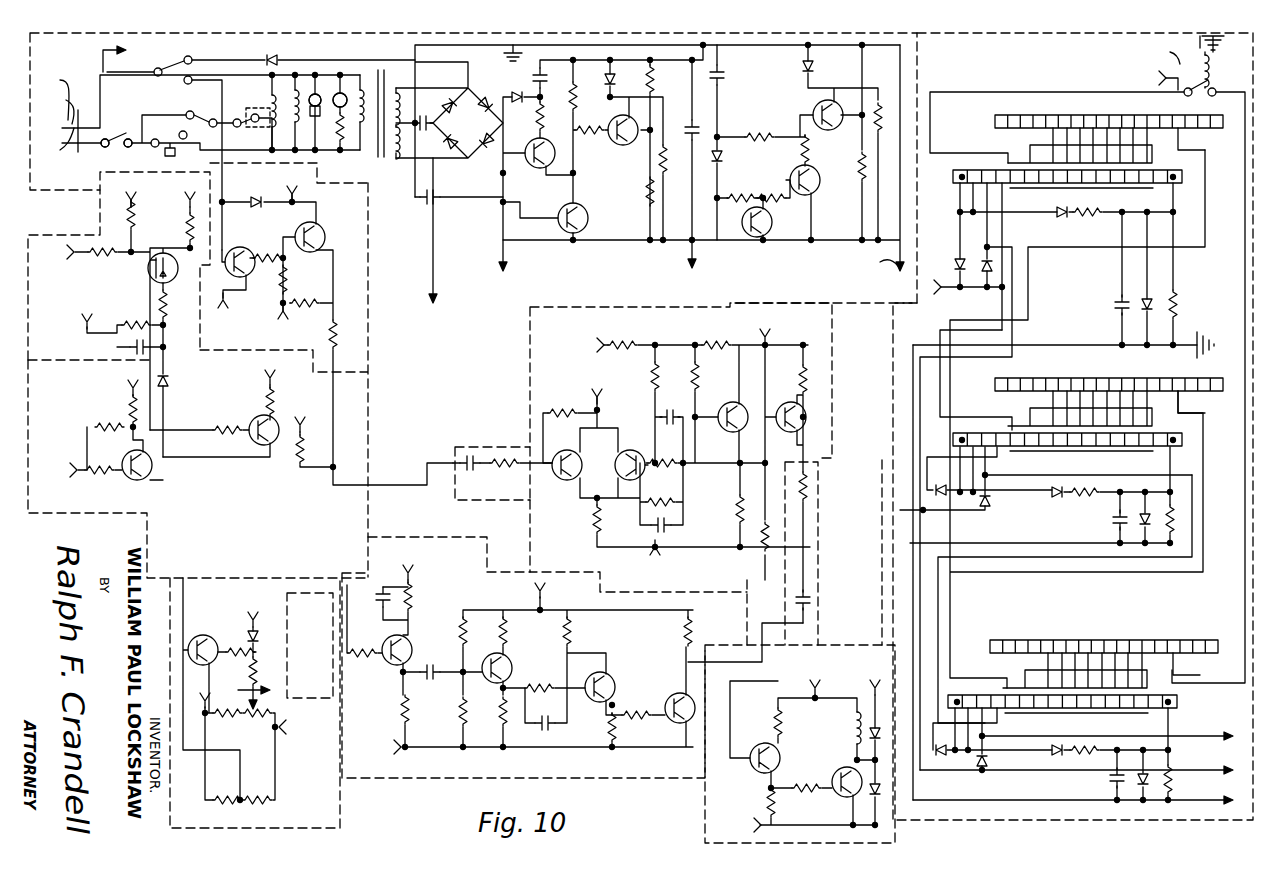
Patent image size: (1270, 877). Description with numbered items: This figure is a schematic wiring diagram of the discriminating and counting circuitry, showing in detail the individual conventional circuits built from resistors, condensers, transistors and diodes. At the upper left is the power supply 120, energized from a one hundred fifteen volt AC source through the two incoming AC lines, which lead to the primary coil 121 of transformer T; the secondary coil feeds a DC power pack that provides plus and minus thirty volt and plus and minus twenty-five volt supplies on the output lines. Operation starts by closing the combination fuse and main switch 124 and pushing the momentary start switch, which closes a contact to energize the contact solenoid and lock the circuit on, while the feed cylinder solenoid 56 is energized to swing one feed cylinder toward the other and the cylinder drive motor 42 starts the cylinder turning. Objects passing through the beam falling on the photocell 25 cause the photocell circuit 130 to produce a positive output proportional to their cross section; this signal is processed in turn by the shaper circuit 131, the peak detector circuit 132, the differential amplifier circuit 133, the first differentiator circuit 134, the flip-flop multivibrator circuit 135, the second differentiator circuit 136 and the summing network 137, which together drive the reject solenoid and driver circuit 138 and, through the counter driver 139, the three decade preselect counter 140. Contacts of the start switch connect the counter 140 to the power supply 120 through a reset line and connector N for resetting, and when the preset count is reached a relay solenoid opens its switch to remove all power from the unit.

The electrical power supply 120 is at (912, 33).
The primary coil 121 is at (364, 152).
The combination fuse and main switch 124 is at (114, 132).
The feed cylinder solenoid 56 is at (297, 94).
The cylinder drive motor 42 is at (342, 93).
The photocell 25 is at (224, 621).
The photocell circuit 130 is at (272, 660).
The shaper circuit 131 is at (434, 538).
The peak detector circuit 132 is at (102, 210).
The differential amplifier circuit 133 is at (77, 511).
The first differentiator circuit 134 is at (505, 453).
The flip-flop multivibrator circuit 135 is at (835, 422).
The second differentiator circuit 136 is at (814, 639).
The summing network 137 is at (802, 557).
The reject solenoid and driver circuit 138 is at (893, 822).
The counter driver 139 is at (368, 372).
The three decade preselect counter 140 is at (1062, 806).